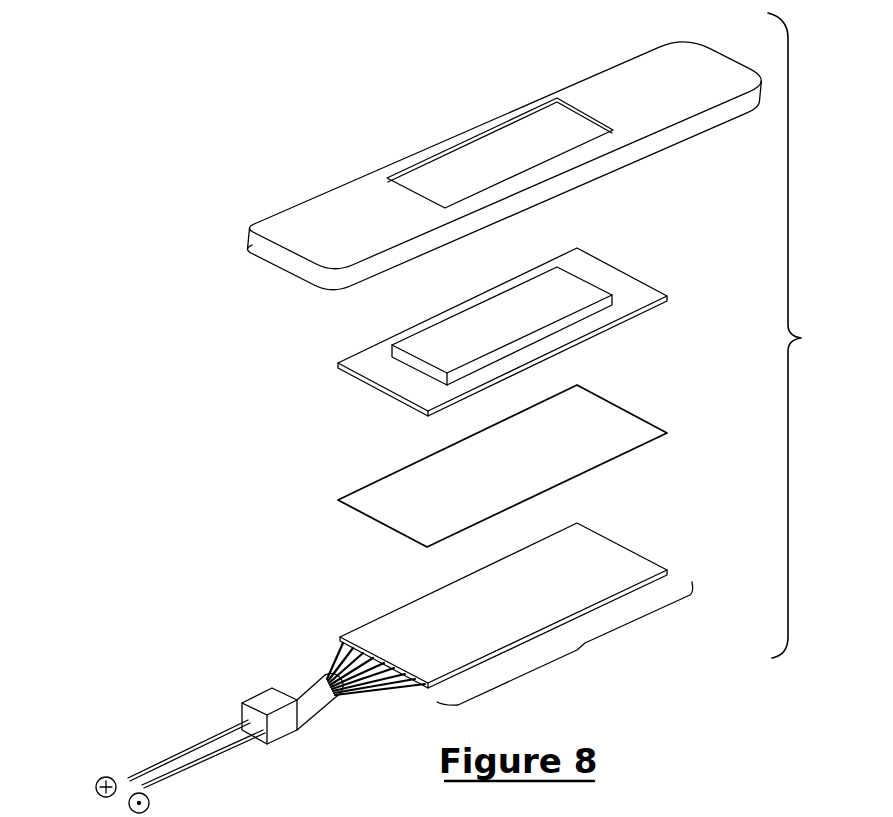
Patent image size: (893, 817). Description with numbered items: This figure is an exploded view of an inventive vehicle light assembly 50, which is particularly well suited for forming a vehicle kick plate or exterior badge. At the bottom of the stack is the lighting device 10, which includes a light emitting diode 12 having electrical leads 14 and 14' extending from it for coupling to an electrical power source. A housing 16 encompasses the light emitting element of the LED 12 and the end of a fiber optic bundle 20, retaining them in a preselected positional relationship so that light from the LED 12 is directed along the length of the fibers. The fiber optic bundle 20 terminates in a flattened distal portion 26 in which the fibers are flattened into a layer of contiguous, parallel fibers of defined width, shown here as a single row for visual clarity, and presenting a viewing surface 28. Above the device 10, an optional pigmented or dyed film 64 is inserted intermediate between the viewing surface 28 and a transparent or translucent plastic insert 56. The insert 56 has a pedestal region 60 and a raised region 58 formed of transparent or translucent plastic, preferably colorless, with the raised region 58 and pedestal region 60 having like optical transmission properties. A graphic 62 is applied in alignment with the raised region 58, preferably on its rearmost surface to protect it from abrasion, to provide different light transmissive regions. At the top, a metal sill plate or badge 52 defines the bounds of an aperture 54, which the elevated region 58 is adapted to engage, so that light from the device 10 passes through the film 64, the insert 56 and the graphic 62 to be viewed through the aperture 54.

The lighting device 10 is at (282, 646).
The light emitting diode 12 is at (288, 730).
The electrical lead 14 is at (196, 767).
The electrical lead 14' is at (111, 746).
The housing 16 is at (307, 702).
The fiber optic bundle 20 is at (330, 644).
The flattened distal portion 26 is at (565, 643).
The viewing surface 28 is at (487, 622).
The vehicle light assembly 50 is at (801, 335).
The metal sill plate or badge 52 is at (652, 90).
The aperture 54 is at (487, 157).
The plastic insert 56 is at (623, 292).
The raised region 58 is at (578, 295).
The pedestal region 60 is at (623, 302).
The graphic 62 is at (452, 337).
The pigmented or dyed film 64 is at (487, 481).